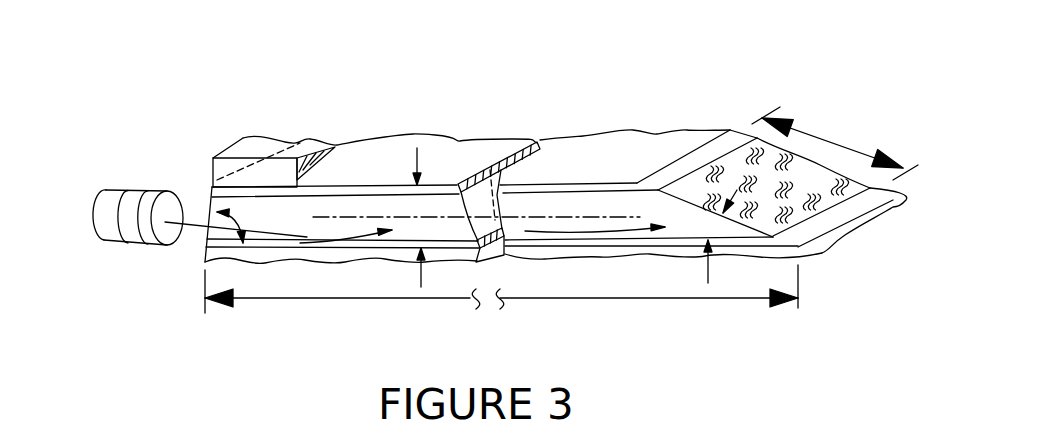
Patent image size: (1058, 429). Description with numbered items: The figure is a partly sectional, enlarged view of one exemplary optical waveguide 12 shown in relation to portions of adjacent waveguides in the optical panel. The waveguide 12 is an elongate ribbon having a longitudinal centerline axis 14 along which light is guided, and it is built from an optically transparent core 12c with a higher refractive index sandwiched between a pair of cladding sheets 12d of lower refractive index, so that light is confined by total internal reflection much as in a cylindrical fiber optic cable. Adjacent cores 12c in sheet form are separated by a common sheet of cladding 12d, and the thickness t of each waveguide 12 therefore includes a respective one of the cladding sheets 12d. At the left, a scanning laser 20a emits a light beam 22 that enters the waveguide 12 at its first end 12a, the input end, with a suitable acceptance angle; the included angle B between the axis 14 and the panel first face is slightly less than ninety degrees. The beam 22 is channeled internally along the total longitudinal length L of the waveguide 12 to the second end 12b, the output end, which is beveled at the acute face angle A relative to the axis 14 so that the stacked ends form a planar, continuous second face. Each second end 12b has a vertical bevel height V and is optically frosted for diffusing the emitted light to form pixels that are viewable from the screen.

The optical waveguide 12 is at (657, 133).
The first end 12a is at (208, 208).
The second end 12b is at (788, 183).
The core 12c is at (382, 216).
The cladding sheet 12d is at (360, 273).
The longitudinal centerline axis 14 is at (536, 218).
The scanning laser 20a is at (122, 242).
The light beam 22 is at (184, 226).
The thickness t is at (413, 160).
The included angle B is at (237, 215).
The face angle A is at (708, 268).
The longitudinal length L is at (501, 289).
The vertical bevel height V is at (835, 143).